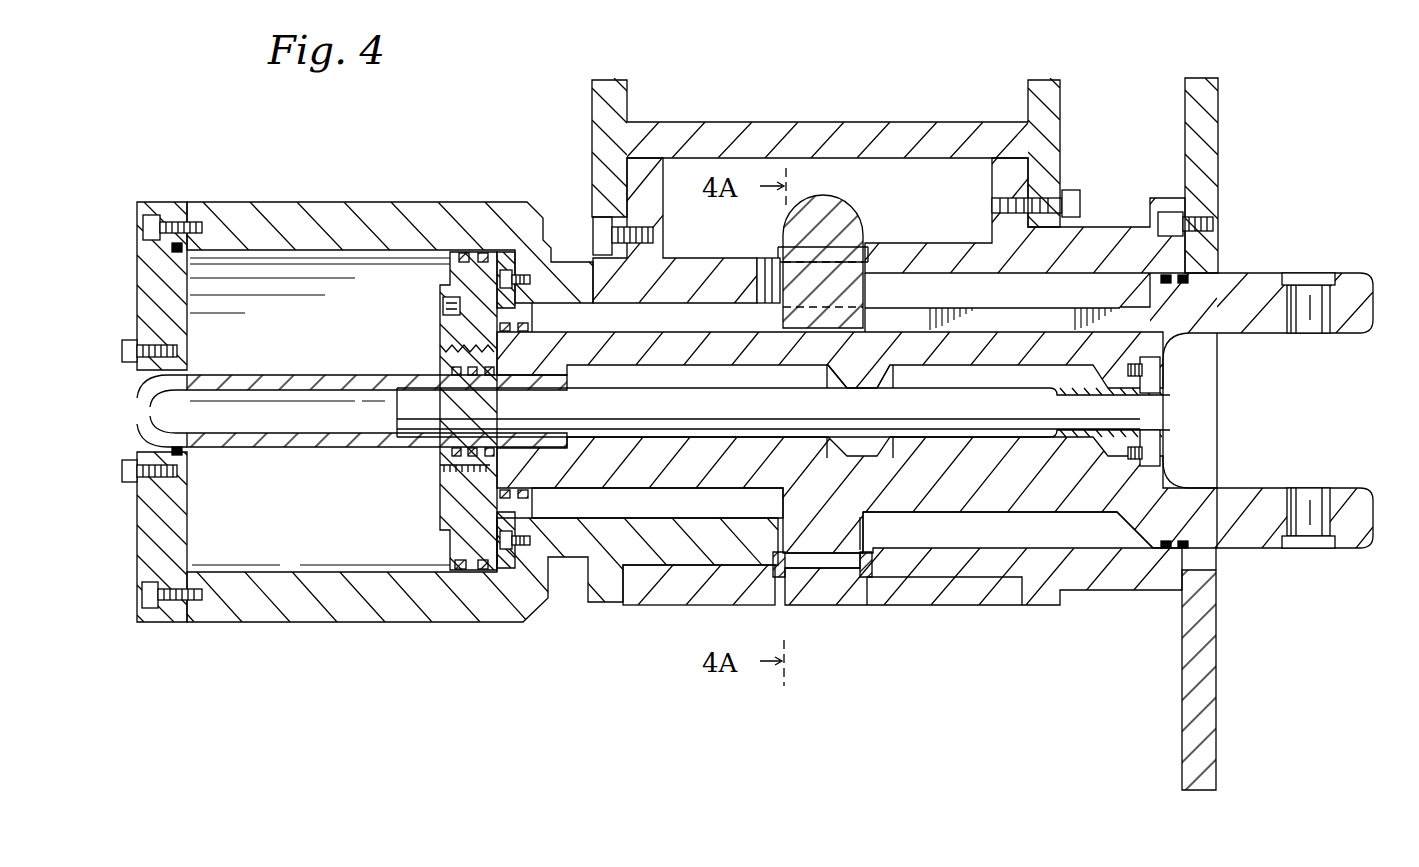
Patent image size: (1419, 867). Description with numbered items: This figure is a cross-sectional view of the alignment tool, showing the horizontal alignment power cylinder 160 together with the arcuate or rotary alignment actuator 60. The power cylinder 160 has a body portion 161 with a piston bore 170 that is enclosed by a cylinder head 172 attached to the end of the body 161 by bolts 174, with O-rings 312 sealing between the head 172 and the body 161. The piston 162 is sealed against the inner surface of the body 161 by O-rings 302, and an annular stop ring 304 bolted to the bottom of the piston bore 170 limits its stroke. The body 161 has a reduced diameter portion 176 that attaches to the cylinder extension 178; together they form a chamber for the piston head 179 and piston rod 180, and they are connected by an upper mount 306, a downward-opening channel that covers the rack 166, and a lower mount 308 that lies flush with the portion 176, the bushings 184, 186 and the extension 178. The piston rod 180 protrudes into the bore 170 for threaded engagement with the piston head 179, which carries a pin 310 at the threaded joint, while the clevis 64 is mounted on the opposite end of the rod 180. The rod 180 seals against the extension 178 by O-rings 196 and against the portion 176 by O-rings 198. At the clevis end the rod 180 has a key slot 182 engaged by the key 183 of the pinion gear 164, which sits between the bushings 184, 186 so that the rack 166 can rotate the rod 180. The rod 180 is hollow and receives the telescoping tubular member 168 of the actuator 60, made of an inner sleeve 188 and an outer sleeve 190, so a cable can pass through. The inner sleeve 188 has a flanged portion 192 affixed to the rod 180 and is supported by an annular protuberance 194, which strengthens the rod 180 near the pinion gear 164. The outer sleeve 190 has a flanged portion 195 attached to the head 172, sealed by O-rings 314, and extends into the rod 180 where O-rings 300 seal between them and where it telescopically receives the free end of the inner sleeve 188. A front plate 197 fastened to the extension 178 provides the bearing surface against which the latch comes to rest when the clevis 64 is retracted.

The arcuate alignment actuator 60 is at (935, 612).
The clevis 64 is at (1263, 273).
The horizontal alignment power cylinder 160 is at (292, 623).
The cylinder body portion 161 is at (291, 203).
The piston 162 is at (440, 498).
The pinion gear 164 is at (847, 530).
The rack 166 is at (845, 213).
The telescoping tubular member 168 is at (400, 376).
The piston bore 170 is at (306, 520).
The cylinder head 172 is at (137, 517).
The bolts 174 is at (142, 597).
The reduced diameter portion 176 is at (677, 606).
The cylinder extension 178 is at (1092, 582).
The piston head 179 is at (445, 323).
The piston rod 180 is at (665, 355).
The key slot 182 is at (1027, 318).
The key 183 is at (883, 304).
The bushing 184 is at (780, 598).
The bushing 186 is at (866, 598).
The inner sleeve 188 is at (1165, 423).
The outer sleeve 190 is at (298, 376).
The flanged portion 192 is at (1162, 387).
The annular protuberance 194 is at (868, 384).
The flanged portion 195 is at (143, 378).
The O-rings 196 is at (1165, 552).
The front plate 197 is at (1188, 741).
The O-rings 198 is at (528, 495).
The O-rings 300 is at (455, 378).
The O-rings 302 is at (457, 204).
The annular stop ring 304 is at (513, 204).
The upper mount 306 is at (905, 121).
The lower mount 308 is at (953, 594).
The pin 310 is at (440, 468).
The O-rings 312 is at (175, 258).
The O-rings 314 is at (160, 456).